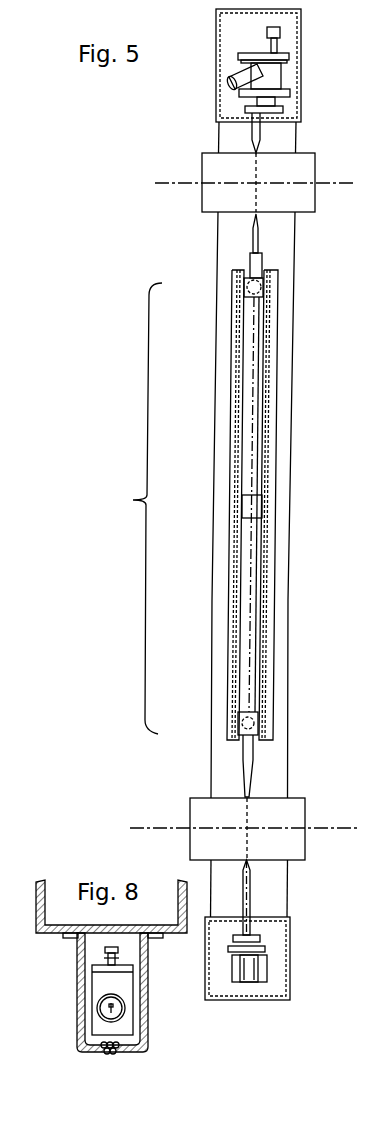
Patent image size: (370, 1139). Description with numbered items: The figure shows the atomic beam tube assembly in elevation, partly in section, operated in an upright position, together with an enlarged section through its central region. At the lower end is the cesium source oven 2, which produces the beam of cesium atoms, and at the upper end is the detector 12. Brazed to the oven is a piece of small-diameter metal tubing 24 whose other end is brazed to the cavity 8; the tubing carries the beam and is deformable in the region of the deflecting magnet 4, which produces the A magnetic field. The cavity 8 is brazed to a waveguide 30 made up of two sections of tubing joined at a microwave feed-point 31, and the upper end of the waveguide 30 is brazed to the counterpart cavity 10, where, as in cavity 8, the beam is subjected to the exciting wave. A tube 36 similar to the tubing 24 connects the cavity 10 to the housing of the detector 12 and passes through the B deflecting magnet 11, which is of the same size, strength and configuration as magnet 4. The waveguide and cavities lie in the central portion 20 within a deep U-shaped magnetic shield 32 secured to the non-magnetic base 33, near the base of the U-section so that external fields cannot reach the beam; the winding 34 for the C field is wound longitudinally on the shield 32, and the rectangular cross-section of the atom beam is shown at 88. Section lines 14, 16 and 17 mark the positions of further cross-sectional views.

In FIG. 5, the detector 12 is at (290, 82).
In FIG. 5, the deflecting magnet 11 is at (303, 158).
In FIG. 5, the section line 14- 14 is at (167, 182).
In FIG. 5, the tube 36 is at (260, 235).
In FIG. 5, the cavity 10 is at (263, 291).
In FIG. 5, the section line 16- 16 is at (250, 262).
In FIG. 5, the central portion 20 is at (132, 508).
In FIG. 5, the guide rods 17 is at (253, 455).
In FIG. 5, the waveguide 30 is at (250, 590).
In FIG. 5, the microwave feed-point 31 is at (255, 510).
In FIG. 5, the cavity 8 is at (257, 736).
In FIG. 8, the cavity 8 is at (97, 983).
In FIG. 5, the deflecting magnet 4 is at (300, 806).
In FIG. 5, the tubing 24 is at (252, 897).
In FIG. 8, the tubing 24 is at (98, 1007).
In FIG. 5, the source oven 2 is at (267, 968).
In FIG. 8, the base 33 is at (50, 935).
In FIG. 8, the shield 32 is at (77, 1028).
In FIG. 8, the cross-section of the atom beam 88 is at (117, 1008).
In FIG. 8, the winding 34 is at (112, 1054).